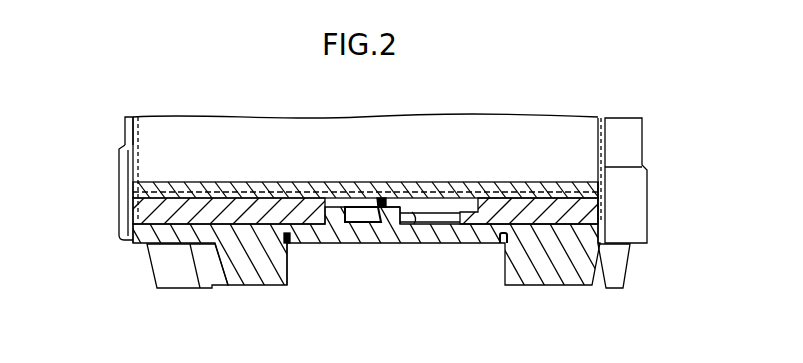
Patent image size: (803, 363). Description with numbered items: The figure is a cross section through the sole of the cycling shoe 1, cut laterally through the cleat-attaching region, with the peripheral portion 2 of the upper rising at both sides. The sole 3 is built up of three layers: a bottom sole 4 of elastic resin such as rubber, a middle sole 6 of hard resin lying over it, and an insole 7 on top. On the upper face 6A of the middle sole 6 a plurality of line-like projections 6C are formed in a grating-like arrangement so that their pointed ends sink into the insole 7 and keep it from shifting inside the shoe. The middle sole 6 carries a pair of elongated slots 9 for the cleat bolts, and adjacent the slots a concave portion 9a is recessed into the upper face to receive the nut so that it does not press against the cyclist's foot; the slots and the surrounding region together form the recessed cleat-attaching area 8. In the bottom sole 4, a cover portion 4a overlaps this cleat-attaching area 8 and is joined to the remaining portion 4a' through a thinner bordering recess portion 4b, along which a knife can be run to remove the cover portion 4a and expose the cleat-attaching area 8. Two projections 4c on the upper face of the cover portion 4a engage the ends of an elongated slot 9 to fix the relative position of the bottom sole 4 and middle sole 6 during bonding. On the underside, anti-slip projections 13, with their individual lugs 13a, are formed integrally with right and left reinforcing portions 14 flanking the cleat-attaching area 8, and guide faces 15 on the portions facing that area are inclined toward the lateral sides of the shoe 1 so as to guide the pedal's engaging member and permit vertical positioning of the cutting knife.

The cycling shoe 1 is at (90, 115).
The peripheral portion 2 is at (107, 137).
The sole 3 is at (112, 232).
The bottom sole 4 is at (128, 248).
The cover portion 4a is at (409, 258).
The remaining portion 4a' is at (201, 288).
The bordering recess portion 4b is at (290, 247).
The projections 4c is at (389, 198).
The middle sole 6 is at (593, 207).
The upper face 6A is at (558, 197).
The line-like projections 6C is at (210, 192).
The insole 7 is at (297, 182).
The cleat-attaching area 8 is at (443, 224).
The elongated slots 9 is at (385, 224).
The concave portion 9a is at (340, 197).
The anti-slip projections 13 is at (394, 296).
The leg 13a is at (176, 289).
The reinforcing portions 14 is at (248, 287).
The guide faces 15 is at (302, 259).